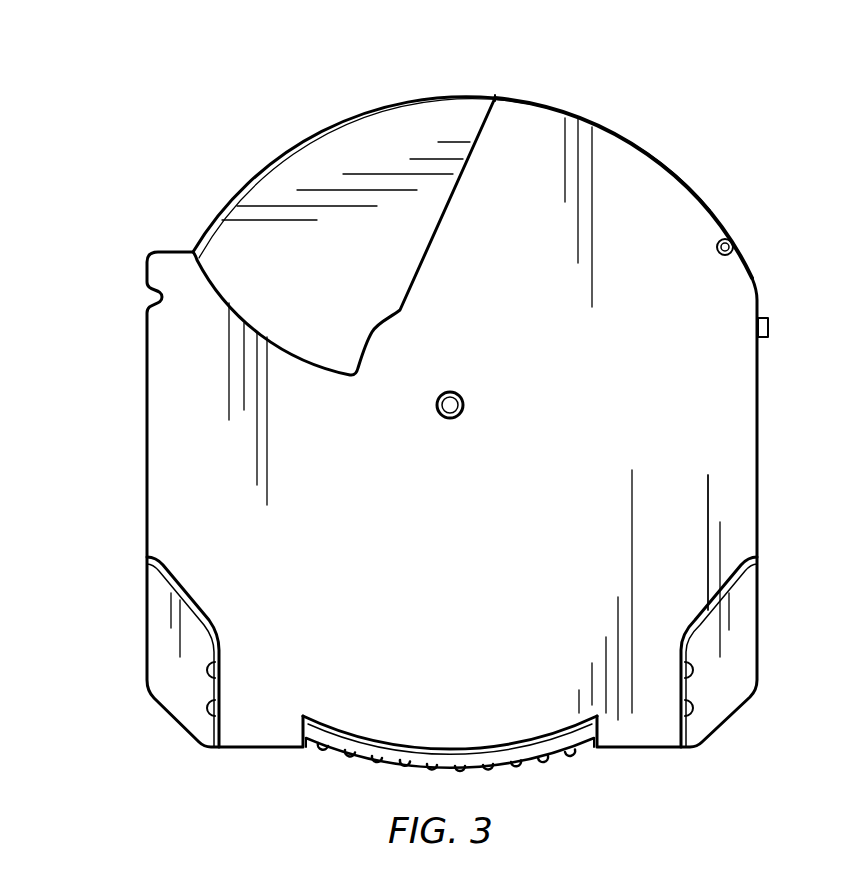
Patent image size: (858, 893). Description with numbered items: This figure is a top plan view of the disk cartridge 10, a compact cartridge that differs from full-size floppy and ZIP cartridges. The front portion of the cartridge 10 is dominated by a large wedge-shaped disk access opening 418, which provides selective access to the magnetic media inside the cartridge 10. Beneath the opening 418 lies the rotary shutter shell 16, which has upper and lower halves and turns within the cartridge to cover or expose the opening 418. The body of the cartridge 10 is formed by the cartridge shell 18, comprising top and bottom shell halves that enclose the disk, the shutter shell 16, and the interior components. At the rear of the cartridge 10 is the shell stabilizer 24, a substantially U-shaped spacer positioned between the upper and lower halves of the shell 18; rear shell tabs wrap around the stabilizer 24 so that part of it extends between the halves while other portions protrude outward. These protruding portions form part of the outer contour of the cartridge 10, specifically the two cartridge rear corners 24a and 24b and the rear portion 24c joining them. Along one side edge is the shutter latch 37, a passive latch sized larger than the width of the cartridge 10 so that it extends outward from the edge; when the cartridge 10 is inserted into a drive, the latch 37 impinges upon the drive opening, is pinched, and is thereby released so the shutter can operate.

The disk cartridge 10 is at (80, 534).
The rotary shutter shell 16 is at (303, 168).
The cartridge shell 18 is at (690, 413).
The shell stabilizer 24 is at (740, 673).
The cartridge rear corner 24a is at (170, 717).
The cartridge rear corner 24b is at (725, 722).
The rear portion 24c is at (540, 763).
The shutter latch 37 is at (773, 318).
The disk access opening 418 is at (364, 90).